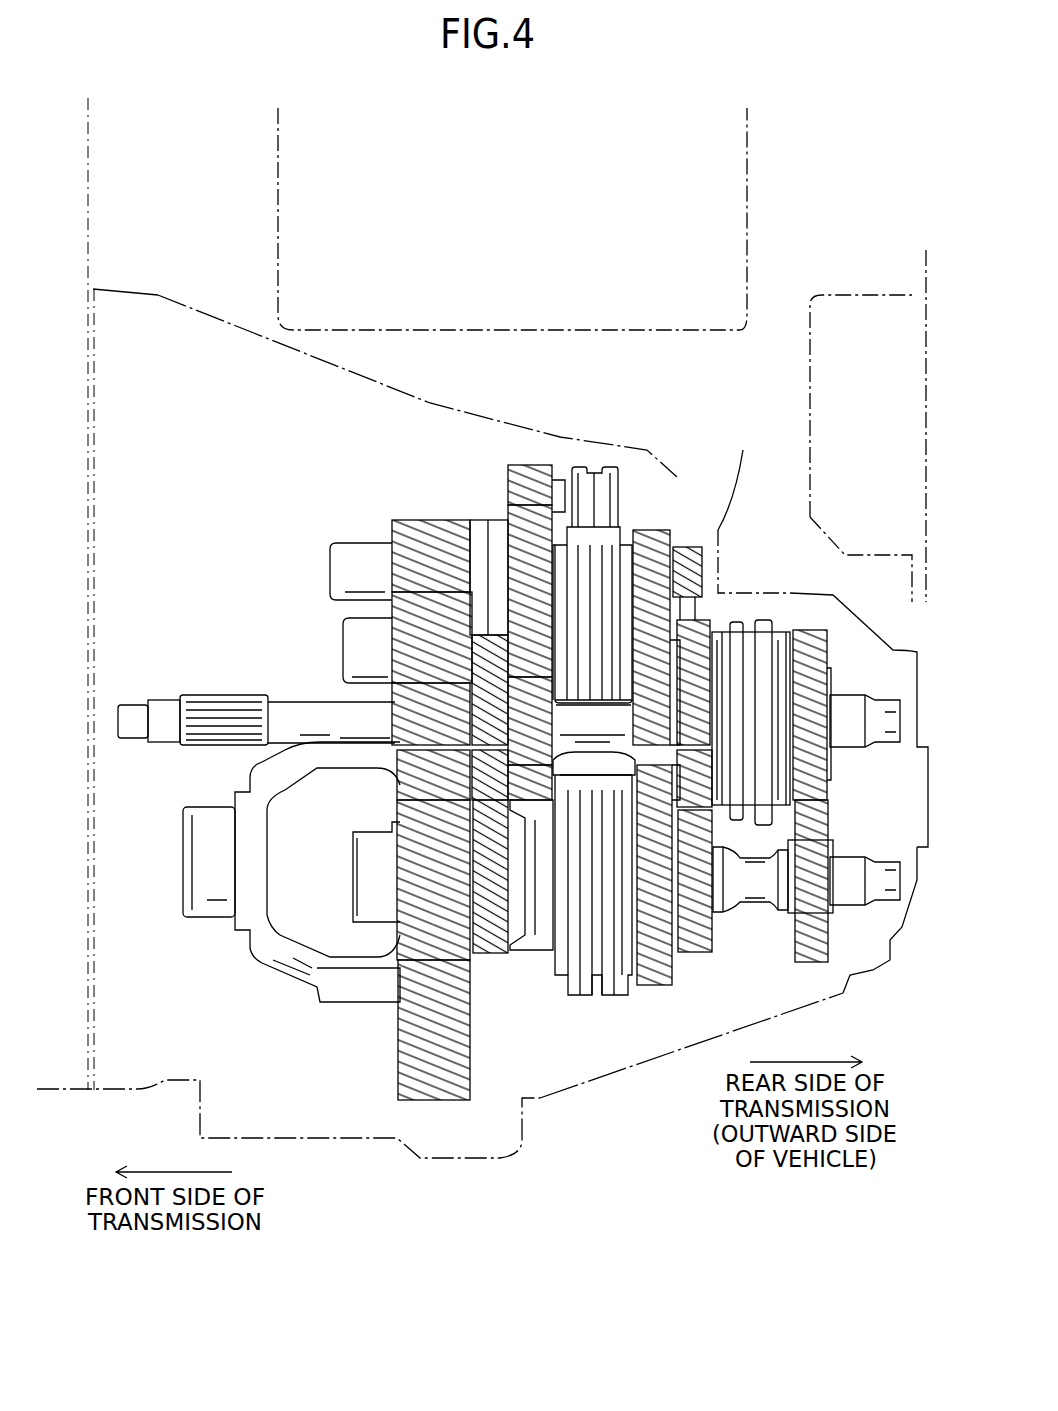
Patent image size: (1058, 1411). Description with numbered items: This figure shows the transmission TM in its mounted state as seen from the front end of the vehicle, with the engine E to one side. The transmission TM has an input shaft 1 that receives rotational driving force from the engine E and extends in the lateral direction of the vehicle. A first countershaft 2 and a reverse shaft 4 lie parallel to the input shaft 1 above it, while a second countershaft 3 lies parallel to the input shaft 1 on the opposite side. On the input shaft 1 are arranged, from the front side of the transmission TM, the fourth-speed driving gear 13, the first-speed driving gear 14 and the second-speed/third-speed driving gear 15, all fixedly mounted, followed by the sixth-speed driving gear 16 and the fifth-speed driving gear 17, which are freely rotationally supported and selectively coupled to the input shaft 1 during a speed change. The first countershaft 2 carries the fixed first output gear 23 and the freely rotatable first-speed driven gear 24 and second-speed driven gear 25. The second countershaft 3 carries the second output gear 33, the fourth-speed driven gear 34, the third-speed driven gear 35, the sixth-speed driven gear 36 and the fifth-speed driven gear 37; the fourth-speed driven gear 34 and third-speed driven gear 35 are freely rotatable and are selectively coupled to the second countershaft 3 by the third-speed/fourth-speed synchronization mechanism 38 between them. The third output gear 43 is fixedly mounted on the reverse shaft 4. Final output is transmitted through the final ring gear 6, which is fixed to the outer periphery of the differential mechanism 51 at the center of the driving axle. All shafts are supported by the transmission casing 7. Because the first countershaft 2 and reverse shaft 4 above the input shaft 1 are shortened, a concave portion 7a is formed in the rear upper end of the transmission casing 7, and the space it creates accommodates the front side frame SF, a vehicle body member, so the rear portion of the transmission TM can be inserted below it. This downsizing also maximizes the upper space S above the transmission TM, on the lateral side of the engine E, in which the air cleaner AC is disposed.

The input shaft 1 is at (165, 700).
The first countershaft 2 is at (362, 638).
The second countershaft 3 is at (375, 907).
The reverse shaft 4 is at (348, 555).
The final ring gear 6 is at (470, 1003).
The transmission casing 7 is at (430, 402).
The concave portion 7a is at (738, 503).
The fourth-speed driving gear 13 is at (477, 695).
The first-speed driving gear 14 is at (528, 690).
The second-speed/third-speed driving gear 15 is at (667, 657).
The sixth-speed driving gear 16 is at (690, 668).
The fifth-speed driving gear 17 is at (812, 635).
The first output gear 23 is at (392, 638).
The first-speed driven gear 24 is at (548, 510).
The second-speed driven gear 25 is at (652, 665).
The second output gear 33 is at (420, 935).
The fourth-speed driven gear 34 is at (498, 950).
The third-speed driven gear 35 is at (648, 987).
The sixth-speed driven gear 36 is at (694, 952).
The fifth-speed driven gear 37 is at (813, 958).
The third-speed/fourth-speed synchronization mechanism 38 is at (596, 982).
The third output gear 43 is at (393, 527).
The differential mechanism 51 is at (270, 952).
The engine E is at (93, 157).
The transmission TM is at (147, 290).
The air cleaner AC is at (748, 253).
The front side frame SF is at (876, 293).
The upper space S is at (655, 387).